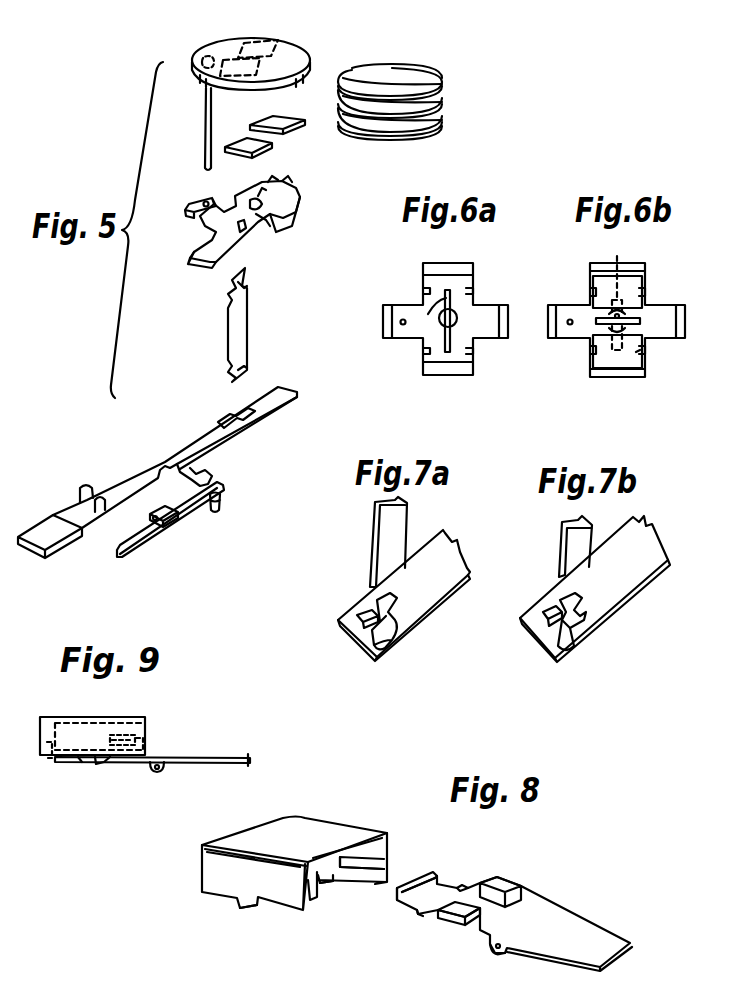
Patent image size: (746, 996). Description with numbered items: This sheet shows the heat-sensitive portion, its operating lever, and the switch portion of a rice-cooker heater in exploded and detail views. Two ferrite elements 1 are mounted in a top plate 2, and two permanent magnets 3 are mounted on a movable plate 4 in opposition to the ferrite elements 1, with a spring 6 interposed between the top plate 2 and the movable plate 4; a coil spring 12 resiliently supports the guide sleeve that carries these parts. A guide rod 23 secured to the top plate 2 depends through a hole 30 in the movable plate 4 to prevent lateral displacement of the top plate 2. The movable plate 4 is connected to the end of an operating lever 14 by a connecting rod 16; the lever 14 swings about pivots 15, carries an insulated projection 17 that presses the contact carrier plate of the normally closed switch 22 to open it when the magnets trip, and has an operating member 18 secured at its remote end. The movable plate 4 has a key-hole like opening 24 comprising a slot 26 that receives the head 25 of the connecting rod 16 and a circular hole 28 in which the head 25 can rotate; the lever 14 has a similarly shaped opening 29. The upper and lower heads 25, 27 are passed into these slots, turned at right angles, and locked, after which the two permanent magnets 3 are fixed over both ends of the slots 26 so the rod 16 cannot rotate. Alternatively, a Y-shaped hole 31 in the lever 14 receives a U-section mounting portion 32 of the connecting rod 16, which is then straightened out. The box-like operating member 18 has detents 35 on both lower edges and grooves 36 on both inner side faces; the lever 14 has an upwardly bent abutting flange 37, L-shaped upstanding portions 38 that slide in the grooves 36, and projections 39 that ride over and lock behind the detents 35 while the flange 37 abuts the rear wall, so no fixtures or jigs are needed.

In FIG. 5, the ferrite elements 1 is at (265, 42).
In FIG. 5, the top plate 2 is at (235, 47).
In FIG. 5, the permanent magnets 3 is at (283, 129).
In FIG. 6B, the permanent magnets 3 is at (590, 290).
In FIG. 5, the movable plate 4 is at (228, 221).
In FIG. 6A, the movable plate 4 is at (488, 312).
In FIG. 6B, the movable plate 4 is at (660, 336).
In FIG. 5, the spring 6 is at (356, 138).
In FIG. 7B, the coil spring 12 is at (595, 589).
In FIG. 5, the operating lever 14 is at (175, 457).
In FIG. 7A, the operating lever 14 is at (404, 595).
In FIG. 9, the operating lever 14 is at (194, 762).
In FIG. 8, the operating lever 14 is at (560, 927).
In FIG. 9, the pivots 15 is at (158, 772).
In FIG. 8, the pivots 15 is at (494, 946).
In FIG. 5, the connecting rod 16 is at (235, 325).
In FIG. 6B, the connecting rod 16 is at (632, 318).
In FIG. 7A, the connecting rod 16 is at (402, 515).
In FIG. 7B, the connecting rod 16 is at (567, 547).
In FIG. 5, the insulated projection 17 is at (218, 510).
In FIG. 5, the operating member 18 is at (50, 522).
In FIG. 9, the operating member 18 is at (76, 718).
In FIG. 8, the operating member 18 is at (328, 828).
In FIG. 5, the switch 22 is at (148, 542).
In FIG. 5, the guide rod 23 is at (205, 122).
In FIG. 5, the opening 24 is at (240, 200).
In FIG. 6A, the opening 24 is at (456, 324).
In FIG. 5, the head 25 is at (248, 288).
In FIG. 5, the slot 26 is at (240, 228).
In FIG. 6A, the slot 26 is at (450, 268).
In FIG. 6B, the slot 26 is at (614, 293).
In FIG. 5, the lower head 27 is at (248, 364).
In FIG. 7B, the lower head 27 is at (573, 623).
In FIG. 5, the circular hole 28 is at (262, 218).
In FIG. 6A, the circular hole 28 is at (432, 324).
In FIG. 6B, the circular hole 28 is at (636, 352).
In FIG. 5, the opening 29 is at (240, 420).
In FIG. 5, the hole 30 is at (186, 209).
In FIG. 6A, the hole 30 is at (403, 318).
In FIG. 6B, the hole 30 is at (570, 326).
In FIG. 7A, the Y-shaped hole 31 is at (362, 613).
In FIG. 7B, the Y-shaped hole 31 is at (550, 610).
In FIG. 7A, the mounting portion 32 is at (397, 627).
In FIG. 7B, the mounting portion 32 is at (564, 650).
In FIG. 9, the detents 35 is at (103, 764).
In FIG. 8, the detents 35 is at (238, 907).
In FIG. 9, the grooves 36 is at (146, 738).
In FIG. 8, the grooves 36 is at (387, 860).
In FIG. 9, the abutting flange 37 is at (50, 758).
In FIG. 8, the abutting flange 37 is at (420, 878).
In FIG. 9, the L-shaped upstanding portions 38 is at (122, 732).
In FIG. 8, the L-shaped upstanding portions 38 is at (508, 884).
In FIG. 9, the projections 39 is at (80, 762).
In FIG. 8, the projections 39 is at (462, 884).